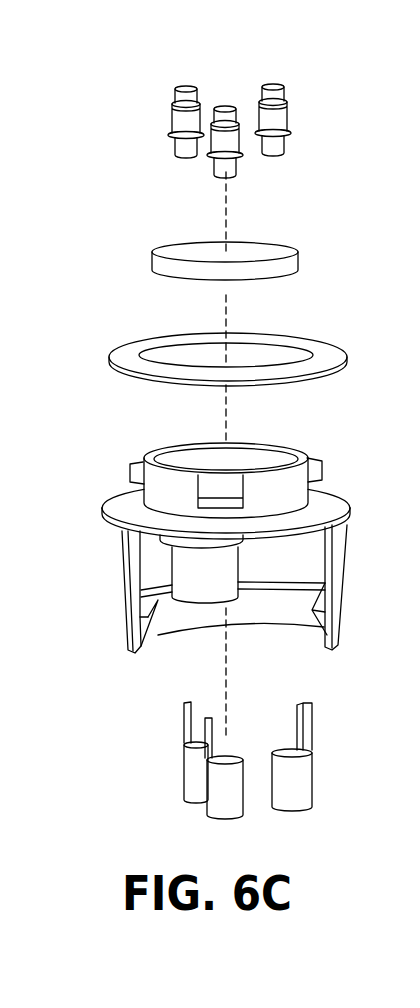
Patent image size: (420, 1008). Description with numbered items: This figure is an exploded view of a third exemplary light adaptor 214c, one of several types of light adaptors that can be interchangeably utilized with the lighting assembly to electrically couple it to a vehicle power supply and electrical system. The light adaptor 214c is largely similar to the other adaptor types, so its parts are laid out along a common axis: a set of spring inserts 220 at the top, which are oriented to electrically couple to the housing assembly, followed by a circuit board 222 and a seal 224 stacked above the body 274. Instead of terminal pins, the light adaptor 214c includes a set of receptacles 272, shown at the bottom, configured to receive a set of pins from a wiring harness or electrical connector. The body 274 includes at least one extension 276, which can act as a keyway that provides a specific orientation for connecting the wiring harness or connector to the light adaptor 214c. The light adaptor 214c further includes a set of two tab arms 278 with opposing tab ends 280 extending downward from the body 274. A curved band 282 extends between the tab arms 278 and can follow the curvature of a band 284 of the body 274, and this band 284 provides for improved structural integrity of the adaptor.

The light adaptor 214c is at (386, 75).
The spring inserts 220 is at (159, 133).
The circuit board 222 is at (298, 258).
The seal 224 is at (331, 350).
The receptacles 272 is at (192, 775).
The body 274 is at (230, 566).
The extension 276 is at (139, 474).
The tab arms 278 is at (128, 555).
The tab ends 280 is at (133, 640).
The curved band 282 is at (182, 608).
The band 284 is at (120, 498).